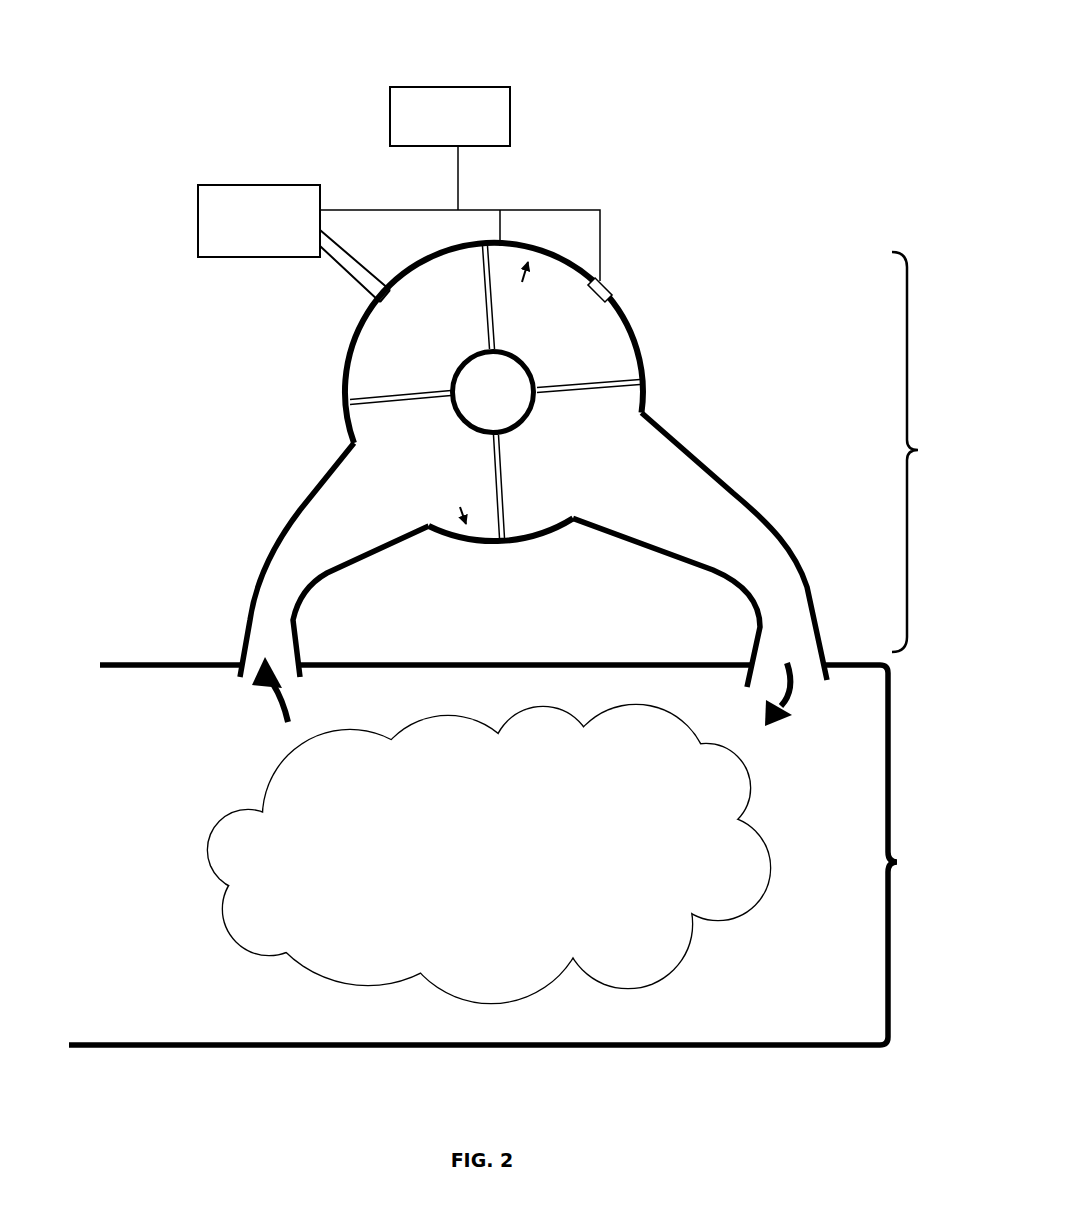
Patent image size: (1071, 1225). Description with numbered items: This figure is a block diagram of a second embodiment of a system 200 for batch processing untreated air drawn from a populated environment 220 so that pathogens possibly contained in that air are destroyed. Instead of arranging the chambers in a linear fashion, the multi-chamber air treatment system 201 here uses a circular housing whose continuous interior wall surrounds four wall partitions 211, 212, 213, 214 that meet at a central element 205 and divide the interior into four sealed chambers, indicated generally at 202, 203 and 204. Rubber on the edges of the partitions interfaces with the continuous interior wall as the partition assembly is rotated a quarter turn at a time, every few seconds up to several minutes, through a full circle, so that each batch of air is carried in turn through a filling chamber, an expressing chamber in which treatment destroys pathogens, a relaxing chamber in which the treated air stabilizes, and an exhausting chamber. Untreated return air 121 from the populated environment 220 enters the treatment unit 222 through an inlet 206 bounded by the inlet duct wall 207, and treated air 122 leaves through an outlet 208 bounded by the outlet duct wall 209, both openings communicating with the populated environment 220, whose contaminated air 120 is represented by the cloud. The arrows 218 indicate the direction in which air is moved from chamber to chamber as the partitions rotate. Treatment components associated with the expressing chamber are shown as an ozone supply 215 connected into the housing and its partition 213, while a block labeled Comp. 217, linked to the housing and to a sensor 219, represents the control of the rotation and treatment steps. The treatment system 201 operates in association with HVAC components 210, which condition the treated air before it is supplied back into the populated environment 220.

The air treatment system 200 is at (247, 84).
The multi-chamber air treatment system 201 is at (440, 443).
The second chamber 202 is at (426, 338).
The third chamber 203 is at (548, 336).
The fourth chamber 204 is at (540, 443).
The central hub 205 is at (493, 392).
The air inlet 206 is at (243, 651).
The inlet duct wall 207 is at (301, 510).
The air outlet 208 is at (750, 655).
The outlet duct wall 209 is at (735, 493).
The HVAC components 210 is at (641, 357).
The partition wall 211 is at (413, 403).
The partition wall 212 is at (486, 311).
The ozone conduit 213 is at (583, 392).
The partition wall 214 is at (505, 517).
The ozone generator 215 is at (200, 210).
The computer controller 217 is at (505, 112).
The air flow direction 218 is at (486, 393).
The sensor 219 is at (608, 290).
The enclosed space 220 is at (504, 855).
The air treatment unit 222 is at (924, 452).
The contaminated air 120 is at (489, 854).
The incoming air flow 121 is at (251, 703).
The treated air flow 122 is at (799, 705).